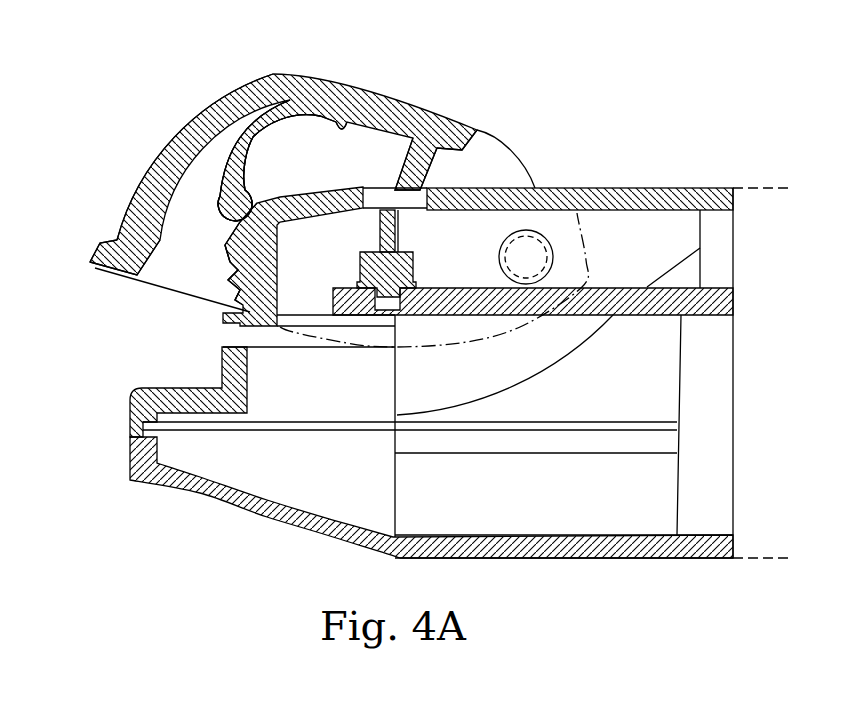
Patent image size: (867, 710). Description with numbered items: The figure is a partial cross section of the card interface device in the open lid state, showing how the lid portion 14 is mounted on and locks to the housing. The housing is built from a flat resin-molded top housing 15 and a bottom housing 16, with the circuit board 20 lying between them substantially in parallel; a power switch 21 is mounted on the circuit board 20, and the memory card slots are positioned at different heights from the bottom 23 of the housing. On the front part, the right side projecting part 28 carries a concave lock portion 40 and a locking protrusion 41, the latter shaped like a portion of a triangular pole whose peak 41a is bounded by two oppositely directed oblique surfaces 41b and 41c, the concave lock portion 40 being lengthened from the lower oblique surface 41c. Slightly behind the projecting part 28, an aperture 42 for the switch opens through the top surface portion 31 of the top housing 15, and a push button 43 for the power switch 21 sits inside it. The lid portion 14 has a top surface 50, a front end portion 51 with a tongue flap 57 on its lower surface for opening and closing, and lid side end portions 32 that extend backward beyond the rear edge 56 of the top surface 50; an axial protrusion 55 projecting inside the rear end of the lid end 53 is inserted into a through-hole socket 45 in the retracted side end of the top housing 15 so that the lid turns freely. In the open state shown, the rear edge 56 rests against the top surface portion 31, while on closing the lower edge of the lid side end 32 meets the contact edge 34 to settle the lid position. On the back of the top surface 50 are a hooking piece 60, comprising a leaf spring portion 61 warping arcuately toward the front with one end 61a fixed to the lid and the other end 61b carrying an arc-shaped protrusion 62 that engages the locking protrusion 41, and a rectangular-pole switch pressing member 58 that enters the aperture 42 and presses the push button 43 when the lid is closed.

The lid portion 14 is at (273, 73).
The top housing 15 is at (710, 188).
The bottom housing 16 is at (650, 560).
The circuit board 20 is at (720, 287).
The power switch 21 is at (362, 267).
The bottom 23 is at (527, 560).
The right side projecting part 28 is at (130, 427).
The top surface portion 31 is at (615, 188).
The lid side end portion 32 is at (465, 333).
The contact edge 34 is at (560, 360).
The concave lock portion 40 is at (225, 312).
The locking protrusion 41 is at (75, 267).
The peak 41a is at (240, 277).
The oblique surface 41b is at (227, 237).
The lower oblique surface 41c is at (230, 287).
The aperture for the switch 42 is at (410, 207).
The push button 43 is at (400, 240).
The through-hole socket 45 is at (555, 243).
The top surface 50 is at (397, 107).
The front end portion 51 is at (163, 158).
The lid end 53 is at (587, 272).
The axial protrusion 55 is at (527, 240).
The rear edge 56 is at (480, 134).
The tongue flap 57 is at (92, 252).
The switch pressing member 58 is at (443, 150).
The hooking piece 60 is at (325, 130).
The leaf spring portion 61 is at (260, 143).
The one end 61a is at (341, 122).
The other end 61b is at (211, 205).
The arc-shaped protrusion 62 is at (252, 186).